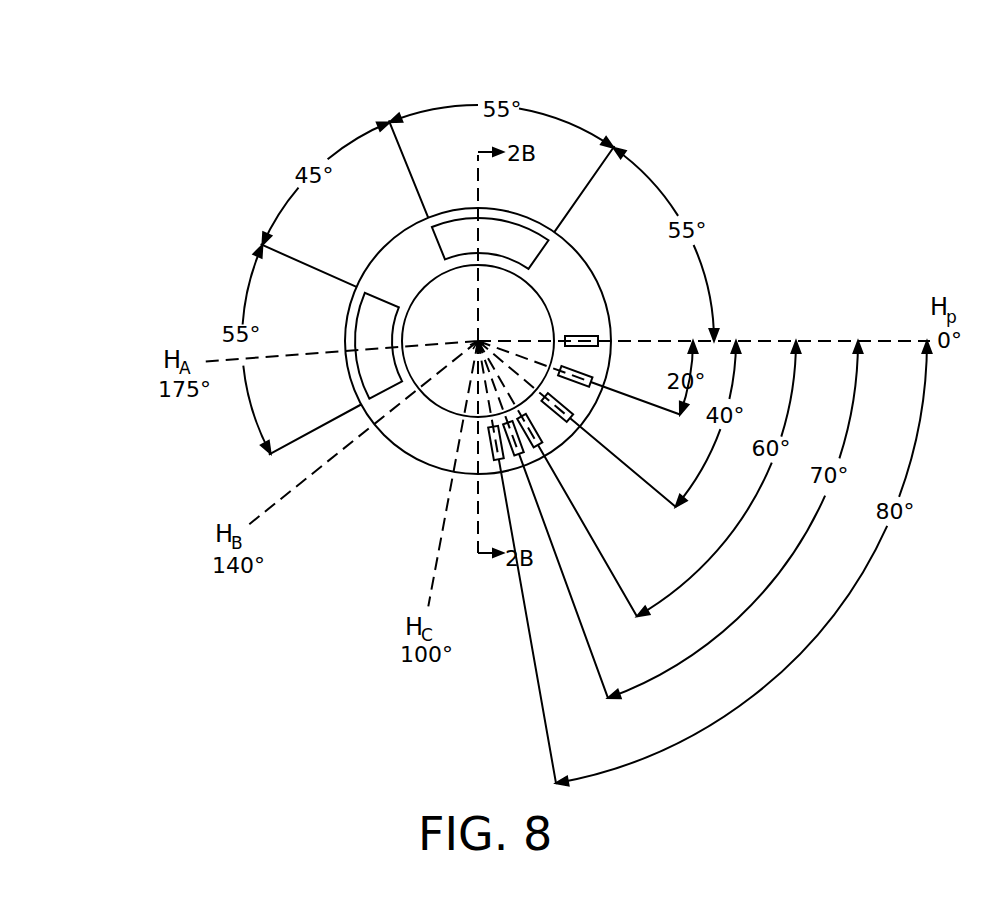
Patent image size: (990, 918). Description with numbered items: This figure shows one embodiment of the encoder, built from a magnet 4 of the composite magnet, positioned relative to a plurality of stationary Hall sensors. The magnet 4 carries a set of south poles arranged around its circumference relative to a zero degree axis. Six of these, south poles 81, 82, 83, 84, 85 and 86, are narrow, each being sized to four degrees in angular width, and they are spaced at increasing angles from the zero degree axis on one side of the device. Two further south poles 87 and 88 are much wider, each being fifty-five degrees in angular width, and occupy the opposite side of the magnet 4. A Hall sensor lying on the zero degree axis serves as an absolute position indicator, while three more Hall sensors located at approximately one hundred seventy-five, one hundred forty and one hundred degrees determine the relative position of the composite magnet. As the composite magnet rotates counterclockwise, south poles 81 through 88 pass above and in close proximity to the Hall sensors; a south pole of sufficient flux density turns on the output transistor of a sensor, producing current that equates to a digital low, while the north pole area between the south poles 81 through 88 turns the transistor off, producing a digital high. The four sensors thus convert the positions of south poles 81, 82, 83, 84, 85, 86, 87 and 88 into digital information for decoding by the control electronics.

The magnet 4 is at (642, 97).
The south pole 81 is at (592, 337).
The south pole 82 is at (588, 370).
The south pole 83 is at (572, 413).
The south pole 84 is at (545, 436).
The south pole 85 is at (527, 452).
The south pole 86 is at (507, 460).
The south pole 87 is at (377, 290).
The south pole 88 is at (497, 218).